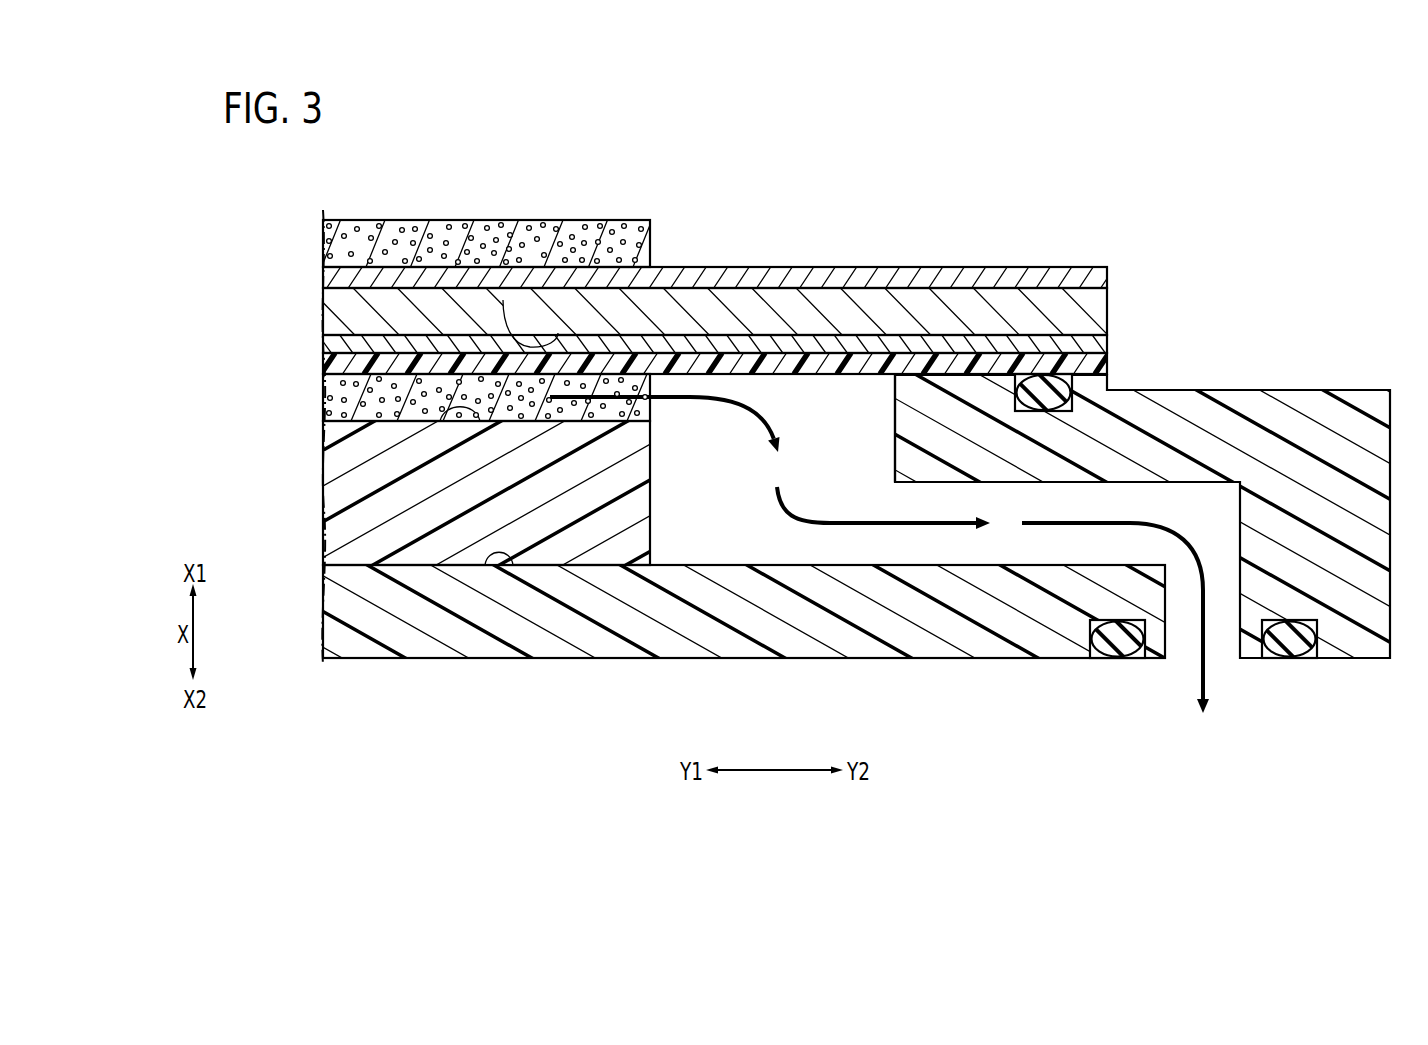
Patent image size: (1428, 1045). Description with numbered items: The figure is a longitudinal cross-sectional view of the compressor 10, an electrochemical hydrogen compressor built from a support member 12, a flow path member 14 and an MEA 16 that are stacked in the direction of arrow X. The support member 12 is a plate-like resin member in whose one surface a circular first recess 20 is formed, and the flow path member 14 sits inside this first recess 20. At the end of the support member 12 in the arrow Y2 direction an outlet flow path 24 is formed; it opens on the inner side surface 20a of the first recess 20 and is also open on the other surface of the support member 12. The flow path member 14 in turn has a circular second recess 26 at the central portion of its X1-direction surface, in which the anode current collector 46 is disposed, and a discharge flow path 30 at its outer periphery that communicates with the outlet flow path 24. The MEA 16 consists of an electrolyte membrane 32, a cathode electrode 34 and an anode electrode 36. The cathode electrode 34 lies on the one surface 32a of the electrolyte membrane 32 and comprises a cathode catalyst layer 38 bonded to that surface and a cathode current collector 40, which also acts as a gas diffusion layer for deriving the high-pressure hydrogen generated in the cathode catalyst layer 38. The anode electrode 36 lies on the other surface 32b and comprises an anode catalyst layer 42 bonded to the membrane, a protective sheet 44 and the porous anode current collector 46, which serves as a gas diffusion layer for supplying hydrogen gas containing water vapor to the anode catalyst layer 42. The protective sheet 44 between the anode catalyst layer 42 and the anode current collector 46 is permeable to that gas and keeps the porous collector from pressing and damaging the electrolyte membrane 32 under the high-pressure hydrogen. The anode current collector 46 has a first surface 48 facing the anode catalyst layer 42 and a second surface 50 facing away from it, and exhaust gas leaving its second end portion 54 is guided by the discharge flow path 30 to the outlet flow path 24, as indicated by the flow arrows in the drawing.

The compressor 10 is at (1278, 174).
The support member 12 is at (1325, 378).
The flow path member 14 is at (392, 579).
The MEA 16 is at (640, 200).
The first recess 20 is at (505, 553).
The inner side surface 20a is at (893, 413).
The outlet flow path 24 is at (1008, 542).
The second recess 26 is at (460, 400).
The discharge flow path 30 is at (766, 540).
The electrolyte membrane 32 is at (353, 313).
The one surface 32a is at (557, 288).
The another surface 32b is at (503, 300).
The cathode electrode 34 is at (255, 213).
The anode electrode 36 is at (255, 325).
The cathode catalyst layer 38 is at (347, 280).
The cathode current collector 40 is at (347, 240).
The anode catalyst layer 42 is at (347, 343).
The protective sheet 44 is at (347, 363).
The anode current collector 46 is at (347, 402).
The first surface 48 is at (465, 373).
The second surface 50 is at (357, 421).
The second end portion 54 is at (655, 388).